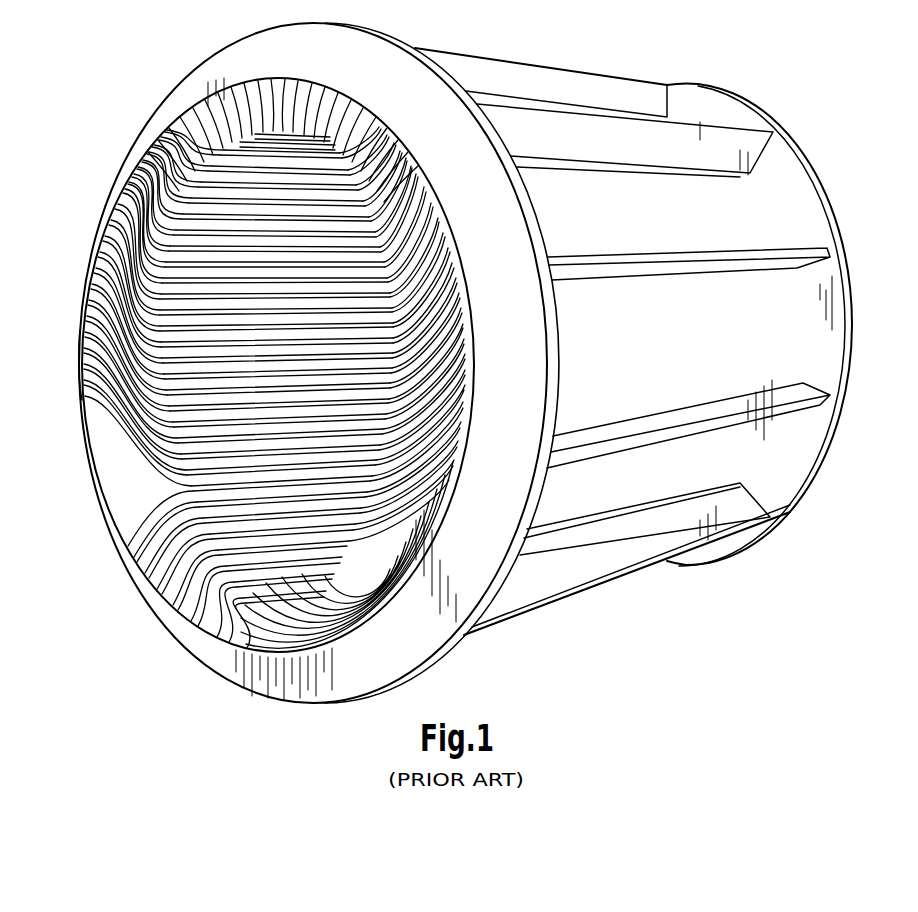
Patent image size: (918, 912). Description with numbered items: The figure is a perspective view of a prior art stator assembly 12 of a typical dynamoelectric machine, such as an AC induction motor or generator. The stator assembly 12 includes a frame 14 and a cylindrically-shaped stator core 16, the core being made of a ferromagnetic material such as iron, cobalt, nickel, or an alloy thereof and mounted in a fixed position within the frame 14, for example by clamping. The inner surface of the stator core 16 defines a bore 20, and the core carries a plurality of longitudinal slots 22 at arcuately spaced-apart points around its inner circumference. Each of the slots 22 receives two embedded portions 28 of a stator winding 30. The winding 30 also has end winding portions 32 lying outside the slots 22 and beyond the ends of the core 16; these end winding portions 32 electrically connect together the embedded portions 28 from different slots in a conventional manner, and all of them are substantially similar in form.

The stator assembly 12 is at (140, 48).
The frame 14 is at (778, 352).
The stator core 16 is at (245, 510).
The bore 20 is at (48, 376).
The longitudinal slots 22 is at (300, 533).
The embedded portions 28 is at (215, 258).
The stator winding 30 is at (92, 520).
The end winding portions 32 is at (104, 474).